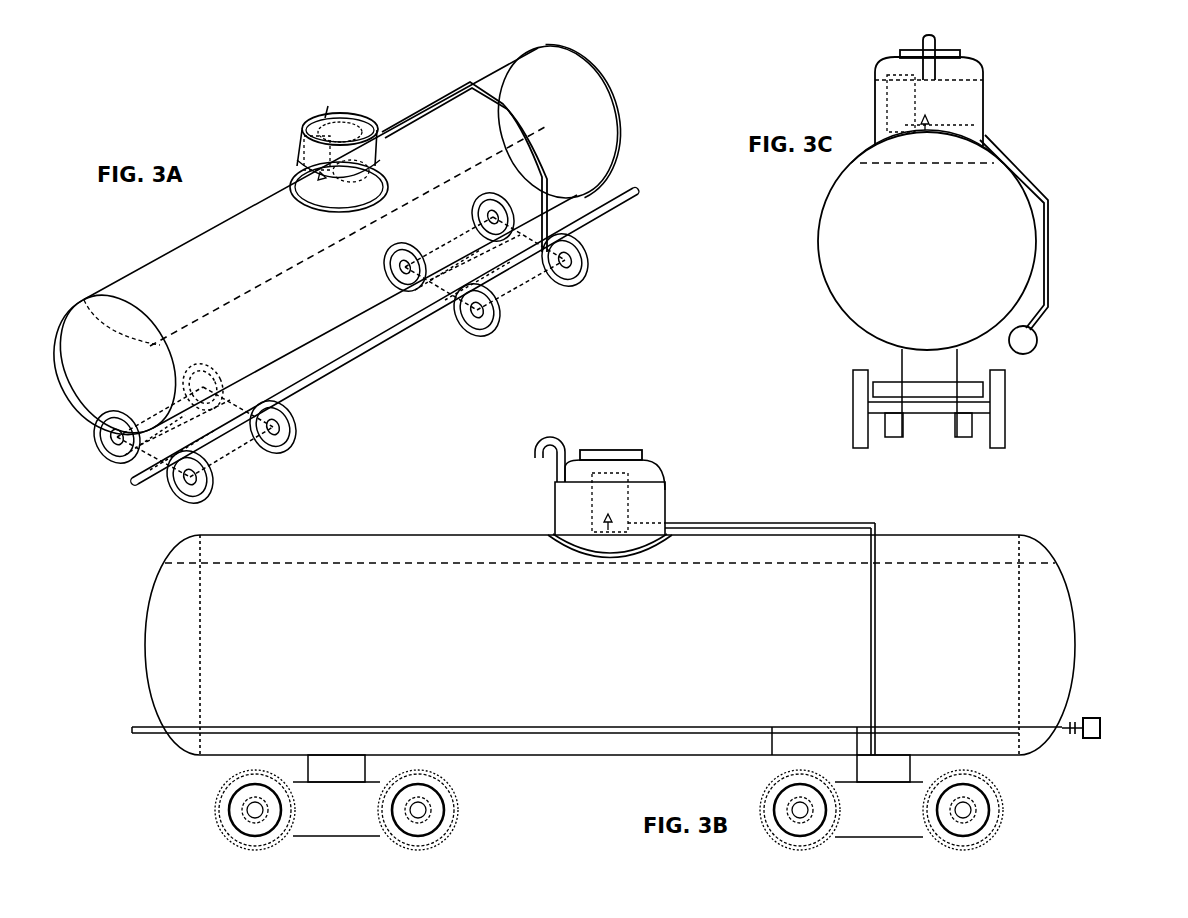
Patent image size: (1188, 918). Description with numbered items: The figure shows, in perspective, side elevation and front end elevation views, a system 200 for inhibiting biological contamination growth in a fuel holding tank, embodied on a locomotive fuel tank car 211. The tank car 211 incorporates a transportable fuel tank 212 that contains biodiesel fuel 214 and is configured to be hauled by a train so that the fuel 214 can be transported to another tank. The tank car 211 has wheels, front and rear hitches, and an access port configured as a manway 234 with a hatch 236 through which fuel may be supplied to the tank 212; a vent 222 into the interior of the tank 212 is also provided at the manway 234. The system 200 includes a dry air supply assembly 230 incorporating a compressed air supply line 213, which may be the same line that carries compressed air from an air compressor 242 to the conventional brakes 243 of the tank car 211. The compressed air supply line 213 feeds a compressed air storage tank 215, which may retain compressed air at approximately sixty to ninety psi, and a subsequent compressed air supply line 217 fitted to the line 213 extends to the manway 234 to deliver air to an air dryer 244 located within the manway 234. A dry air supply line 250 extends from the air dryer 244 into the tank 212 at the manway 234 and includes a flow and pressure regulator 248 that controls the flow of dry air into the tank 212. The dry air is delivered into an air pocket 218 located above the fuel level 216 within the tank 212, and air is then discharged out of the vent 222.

In FIG. 3A, the system for inhibiting biological contamination growth 200 is at (266, 102).
In FIG. 3B, the system for inhibiting biological contamination growth 200 is at (424, 528).
In FIG. 3C, the system for inhibiting biological contamination growth 200 is at (1074, 245).
In FIG. 3B, the locomotive fuel tank car 211 is at (687, 708).
In FIG. 3A, the transportable fuel tank 212 is at (622, 135).
In FIG. 3B, the transportable fuel tank 212 is at (150, 610).
In FIG. 3C, the transportable fuel tank 212 is at (835, 307).
In FIG. 3A, the compressed air supply line 213 is at (368, 348).
In FIG. 3B, the compressed air supply line 213 is at (455, 722).
In FIG. 3A, the biodiesel fuel 214 is at (590, 128).
In FIG. 3C, the biodiesel fuel 214 is at (882, 250).
In FIG. 3B, the compressed air storage tank 215 is at (817, 730).
In FIG. 3C, the compressed air storage tank 215 is at (1038, 340).
In FIG. 3A, the fuel level 216 is at (80, 292).
In FIG. 3B, the fuel level 216 is at (810, 566).
In FIG. 3C, the fuel level 216 is at (868, 166).
In FIG. 3A, the compressed air supply line 217 is at (413, 108).
In FIG. 3B, the compressed air supply line 217 is at (878, 655).
In FIG. 3C, the compressed air supply line 217 is at (1010, 160).
In FIG. 3A, the air pocket 218 is at (185, 262).
In FIG. 3B, the air pocket 218 is at (958, 550).
In FIG. 3A, the vent 222 is at (303, 135).
In FIG. 3B, the vent 222 is at (575, 460).
In FIG. 3C, the vent 222 is at (940, 40).
In FIG. 3A, the dry air supply assembly 230 is at (336, 188).
In FIG. 3B, the dry air supply assembly 230 is at (581, 471).
In FIG. 3C, the dry air supply assembly 230 is at (938, 90).
In FIG. 3A, the manway 234 is at (383, 150).
In FIG. 3B, the manway 234 is at (553, 490).
In FIG. 3C, the manway 234 is at (878, 70).
In FIG. 3A, the hatch 236 is at (335, 122).
In FIG. 3B, the hatch 236 is at (606, 455).
In FIG. 3C, the hatch 236 is at (962, 54).
In FIG. 3B, the air compressor 242 is at (1090, 717).
In FIG. 3B, the brakes 243 is at (232, 802).
In FIG. 3A, the air dryer 244 is at (302, 178).
In FIG. 3B, the air dryer 244 is at (630, 497).
In FIG. 3C, the air dryer 244 is at (897, 95).
In FIG. 3A, the flow and pressure regulator 248 is at (346, 148).
In FIG. 3B, the flow and pressure regulator 248 is at (606, 517).
In FIG. 3C, the flow and pressure regulator 248 is at (930, 122).
In FIG. 3A, the dry air supply line 250 is at (318, 188).
In FIG. 3C, the dry air supply line 250 is at (922, 122).